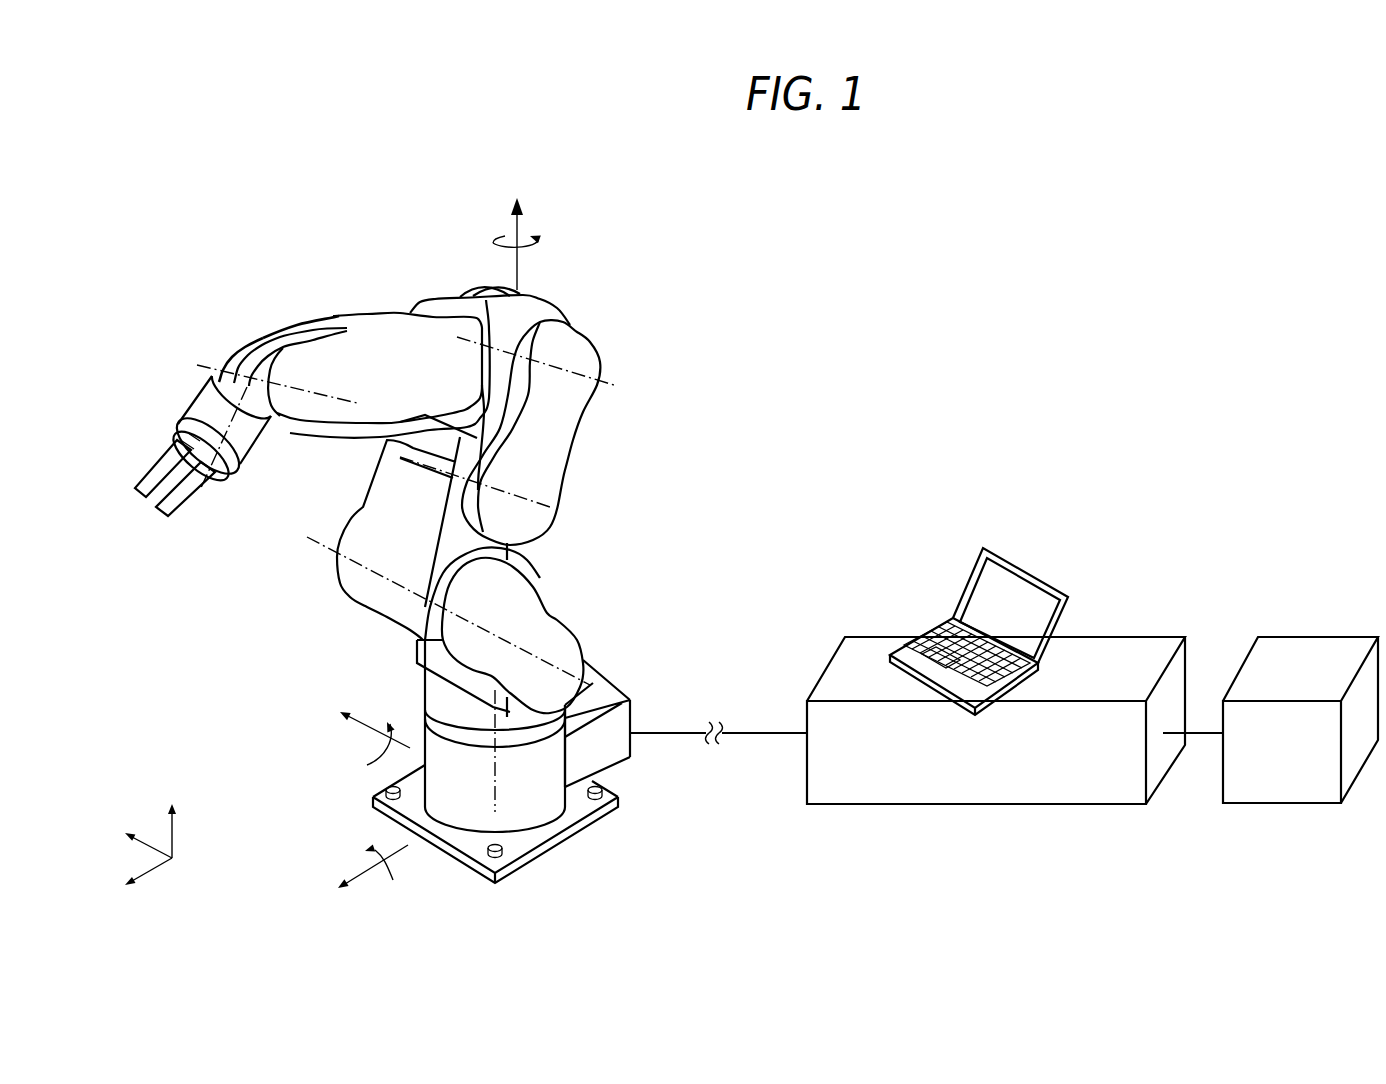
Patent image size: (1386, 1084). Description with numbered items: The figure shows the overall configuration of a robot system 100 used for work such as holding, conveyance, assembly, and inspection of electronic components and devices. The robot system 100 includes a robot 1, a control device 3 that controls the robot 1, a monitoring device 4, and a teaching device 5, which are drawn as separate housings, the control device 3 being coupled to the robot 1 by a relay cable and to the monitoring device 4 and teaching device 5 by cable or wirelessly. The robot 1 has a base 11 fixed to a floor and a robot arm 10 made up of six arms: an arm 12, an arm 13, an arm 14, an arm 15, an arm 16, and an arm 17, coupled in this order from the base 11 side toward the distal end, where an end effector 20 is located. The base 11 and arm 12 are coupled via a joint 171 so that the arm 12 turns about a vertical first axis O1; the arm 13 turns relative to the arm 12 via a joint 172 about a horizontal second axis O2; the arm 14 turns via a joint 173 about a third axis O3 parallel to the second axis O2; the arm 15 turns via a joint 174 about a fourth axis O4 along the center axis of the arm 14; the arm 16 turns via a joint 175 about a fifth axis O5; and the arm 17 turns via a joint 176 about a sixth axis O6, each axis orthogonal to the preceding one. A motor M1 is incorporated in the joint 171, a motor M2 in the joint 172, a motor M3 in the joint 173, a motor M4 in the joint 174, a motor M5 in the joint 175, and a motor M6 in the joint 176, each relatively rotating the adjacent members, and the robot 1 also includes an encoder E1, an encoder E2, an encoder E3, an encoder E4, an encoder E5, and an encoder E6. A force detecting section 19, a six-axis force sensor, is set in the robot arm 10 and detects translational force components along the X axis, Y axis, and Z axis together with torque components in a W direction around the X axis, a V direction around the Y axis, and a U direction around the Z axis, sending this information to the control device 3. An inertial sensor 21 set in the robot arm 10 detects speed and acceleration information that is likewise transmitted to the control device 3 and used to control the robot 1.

The robot system 100 is at (1152, 272).
The robot 1 is at (670, 275).
The robot arm 10 is at (606, 340).
The base 11 is at (520, 810).
The arm 12 is at (570, 653).
The arm 13 is at (545, 490).
The arm 14 is at (525, 300).
The arm 15 is at (403, 340).
The arm 16 is at (236, 347).
The arm 17 is at (210, 398).
The force detecting section 19 is at (240, 447).
The end effector 20 is at (200, 490).
The inertial sensor 21 is at (185, 404).
The joint 171 is at (450, 693).
The joint 172 is at (337, 563).
The joint 173 is at (490, 315).
The joint 174 is at (457, 293).
The joint 175 is at (265, 334).
The joint 176 is at (277, 410).
The first axis O1 is at (497, 777).
The second axis O2 is at (590, 683).
The third axis O3 is at (553, 508).
The fourth axis O4 is at (613, 380).
The fifth axis O5 is at (292, 385).
The sixth axis O6 is at (247, 390).
The motor M1 is at (561, 792).
The encoder E1 is at (533, 783).
The motor M2 is at (559, 636).
The encoder E2 is at (523, 633).
The motor M3 is at (576, 443).
The encoder E3 is at (510, 510).
The motor M4 is at (501, 369).
The encoder E4 is at (500, 363).
The motor M5 is at (314, 301).
The encoder E5 is at (380, 370).
The motor M6 is at (175, 345).
The encoder E6 is at (210, 341).
The control device 3 is at (1145, 630).
The monitoring device 4 is at (1340, 630).
The teaching device 5 is at (1030, 562).
The X axis X is at (257, 773).
The Y axis Y is at (254, 877).
The Z axis Z is at (345, 513).
The U direction U is at (543, 247).
The V direction V is at (393, 880).
The W direction W is at (367, 765).